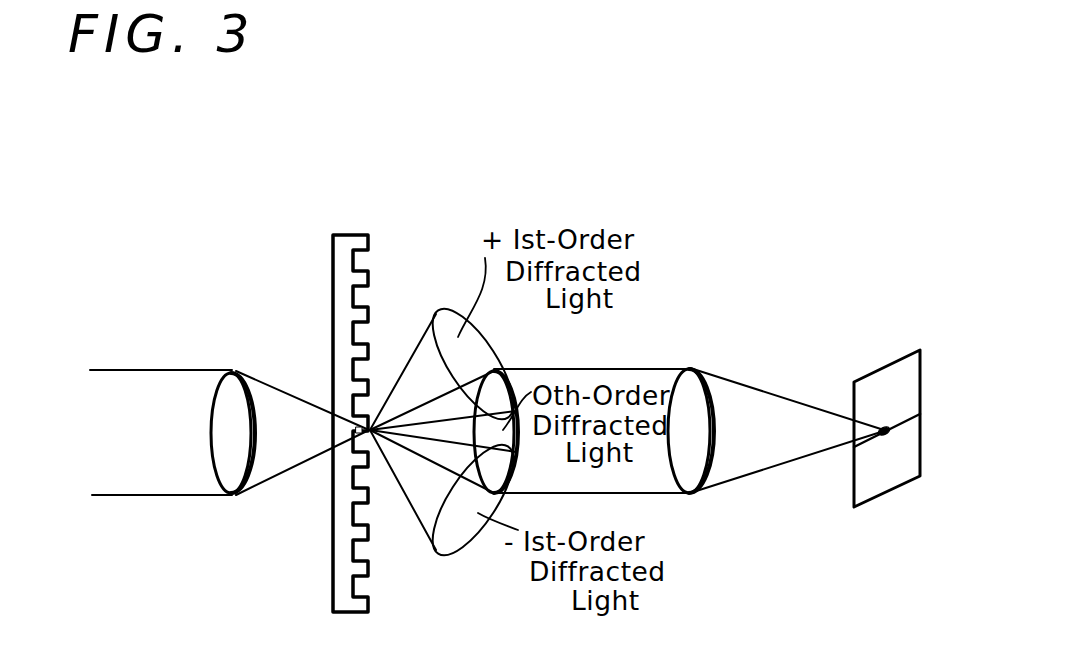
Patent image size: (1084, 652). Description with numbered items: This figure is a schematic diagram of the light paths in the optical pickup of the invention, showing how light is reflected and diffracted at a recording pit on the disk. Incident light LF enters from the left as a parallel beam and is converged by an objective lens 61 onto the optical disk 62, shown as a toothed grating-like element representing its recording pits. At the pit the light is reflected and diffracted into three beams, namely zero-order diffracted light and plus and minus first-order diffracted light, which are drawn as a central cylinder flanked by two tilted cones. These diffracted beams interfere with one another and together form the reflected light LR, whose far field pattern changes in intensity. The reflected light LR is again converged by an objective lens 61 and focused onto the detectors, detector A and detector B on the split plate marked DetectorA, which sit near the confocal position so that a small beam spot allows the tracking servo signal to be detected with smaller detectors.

The objective lens 61 is at (233, 386).
The optical disk 62 is at (343, 233).
The incident light LF is at (140, 497).
The reflected light LR is at (767, 470).
The detector A DetectorA is at (883, 378).